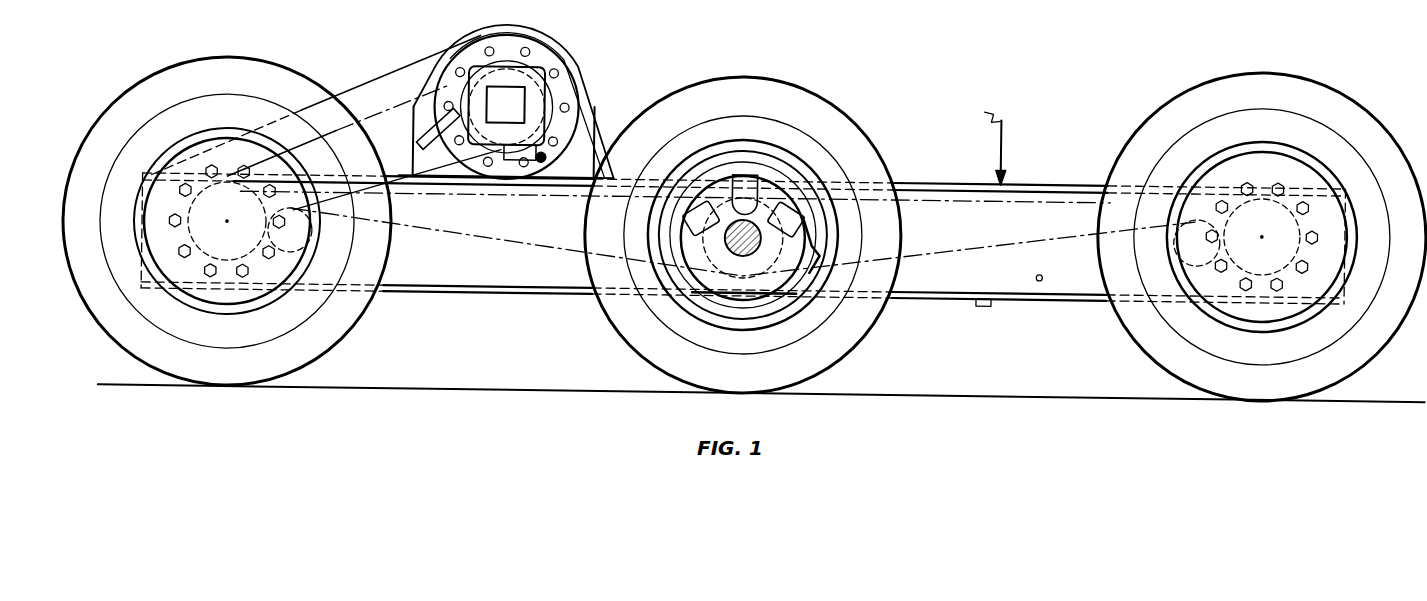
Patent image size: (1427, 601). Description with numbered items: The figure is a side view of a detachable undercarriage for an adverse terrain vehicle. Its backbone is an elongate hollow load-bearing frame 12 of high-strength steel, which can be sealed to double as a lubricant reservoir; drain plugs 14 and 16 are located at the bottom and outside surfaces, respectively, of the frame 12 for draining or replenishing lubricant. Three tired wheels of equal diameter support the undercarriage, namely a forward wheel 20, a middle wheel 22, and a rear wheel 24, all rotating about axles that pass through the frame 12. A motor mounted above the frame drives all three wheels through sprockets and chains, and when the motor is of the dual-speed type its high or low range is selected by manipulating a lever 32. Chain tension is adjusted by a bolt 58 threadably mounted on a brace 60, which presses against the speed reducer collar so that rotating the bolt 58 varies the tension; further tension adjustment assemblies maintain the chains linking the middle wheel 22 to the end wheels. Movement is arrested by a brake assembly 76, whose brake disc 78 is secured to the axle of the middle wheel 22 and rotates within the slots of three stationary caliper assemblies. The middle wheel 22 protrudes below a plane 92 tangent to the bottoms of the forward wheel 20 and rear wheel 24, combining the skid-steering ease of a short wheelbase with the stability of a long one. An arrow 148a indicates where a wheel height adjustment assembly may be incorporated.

The frame 12 is at (938, 172).
The drain plug 14 is at (984, 292).
The drain plug 16 is at (1040, 267).
The forward wheel 20 is at (1254, 269).
The middle wheel 22 is at (736, 266).
The rear wheel 24 is at (233, 252).
The lever 32 is at (541, 153).
The bolt 58 is at (398, 97).
The brace 60 is at (413, 121).
The brake assembly 76 is at (776, 175).
The brake disc 78 is at (787, 242).
The plane 92 is at (995, 386).
The arrow 148a is at (970, 143).